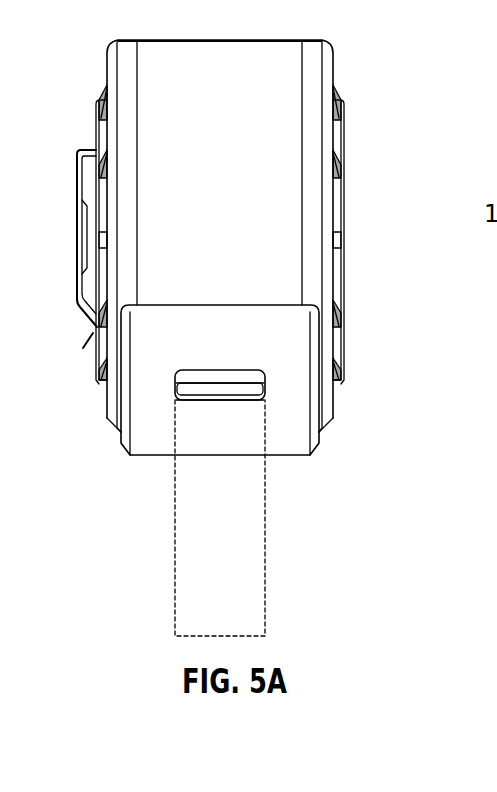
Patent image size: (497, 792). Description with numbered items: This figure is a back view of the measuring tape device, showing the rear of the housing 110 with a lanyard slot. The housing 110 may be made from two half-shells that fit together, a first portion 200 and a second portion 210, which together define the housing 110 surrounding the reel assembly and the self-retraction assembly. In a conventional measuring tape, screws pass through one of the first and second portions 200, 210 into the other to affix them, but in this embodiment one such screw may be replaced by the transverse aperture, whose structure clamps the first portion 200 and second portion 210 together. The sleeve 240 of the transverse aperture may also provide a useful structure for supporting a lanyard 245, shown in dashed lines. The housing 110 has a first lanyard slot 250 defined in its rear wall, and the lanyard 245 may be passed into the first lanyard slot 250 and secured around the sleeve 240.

The housing 110 is at (310, 215).
The first portion 200 is at (236, 338).
The second portion 210 is at (262, 419).
The sleeve 240 is at (240, 388).
The lanyard 245 is at (265, 598).
The first lanyard slot 250 is at (197, 397).